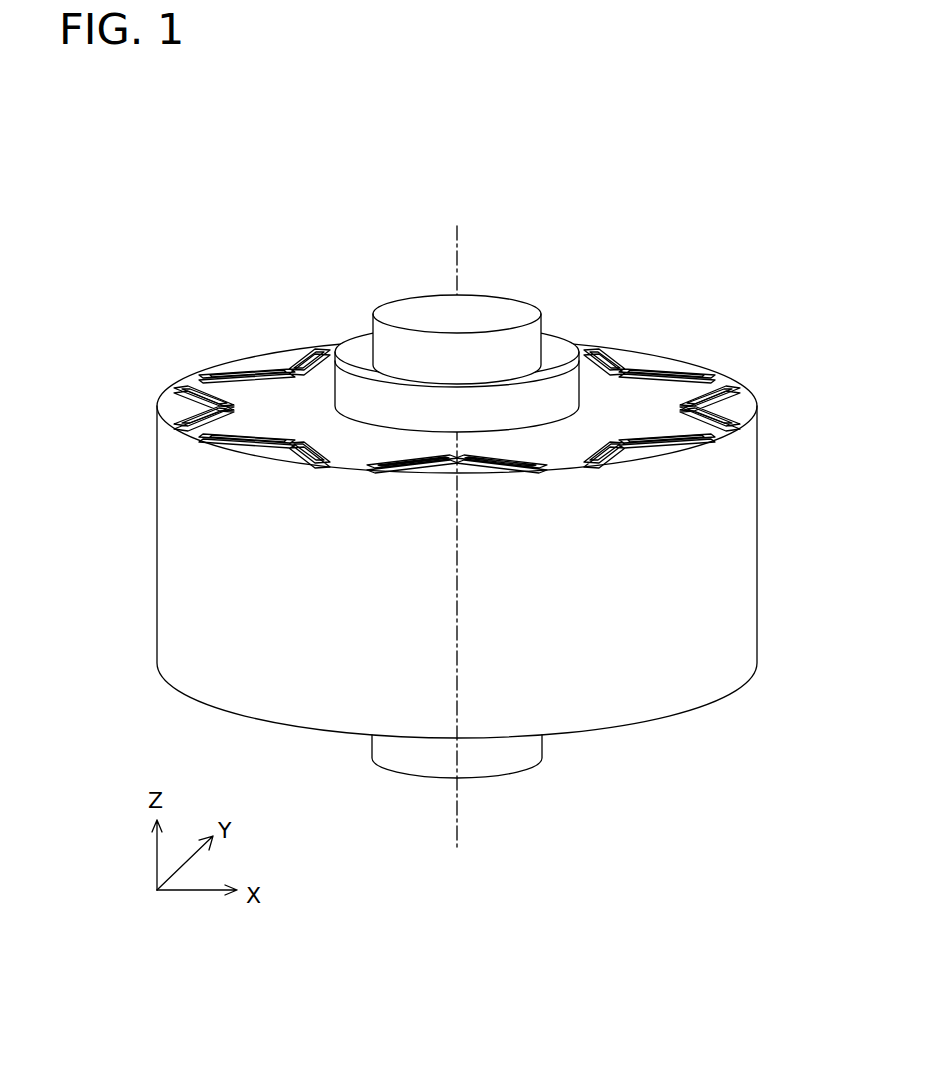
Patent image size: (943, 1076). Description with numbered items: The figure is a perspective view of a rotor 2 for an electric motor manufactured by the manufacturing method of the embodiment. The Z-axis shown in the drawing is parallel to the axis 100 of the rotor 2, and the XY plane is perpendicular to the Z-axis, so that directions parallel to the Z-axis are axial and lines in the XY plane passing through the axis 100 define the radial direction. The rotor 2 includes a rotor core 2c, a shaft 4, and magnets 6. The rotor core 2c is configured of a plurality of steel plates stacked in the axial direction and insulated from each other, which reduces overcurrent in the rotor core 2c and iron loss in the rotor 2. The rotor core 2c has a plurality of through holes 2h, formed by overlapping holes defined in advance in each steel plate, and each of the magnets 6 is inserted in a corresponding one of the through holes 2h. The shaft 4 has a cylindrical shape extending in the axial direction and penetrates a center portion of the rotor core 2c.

The axis 100 is at (457, 522).
The rotor 2 is at (456, 480).
The rotor core 2c is at (160, 536).
The through holes 2h is at (175, 416).
The magnets 6 is at (193, 412).
The shaft 4 is at (488, 307).